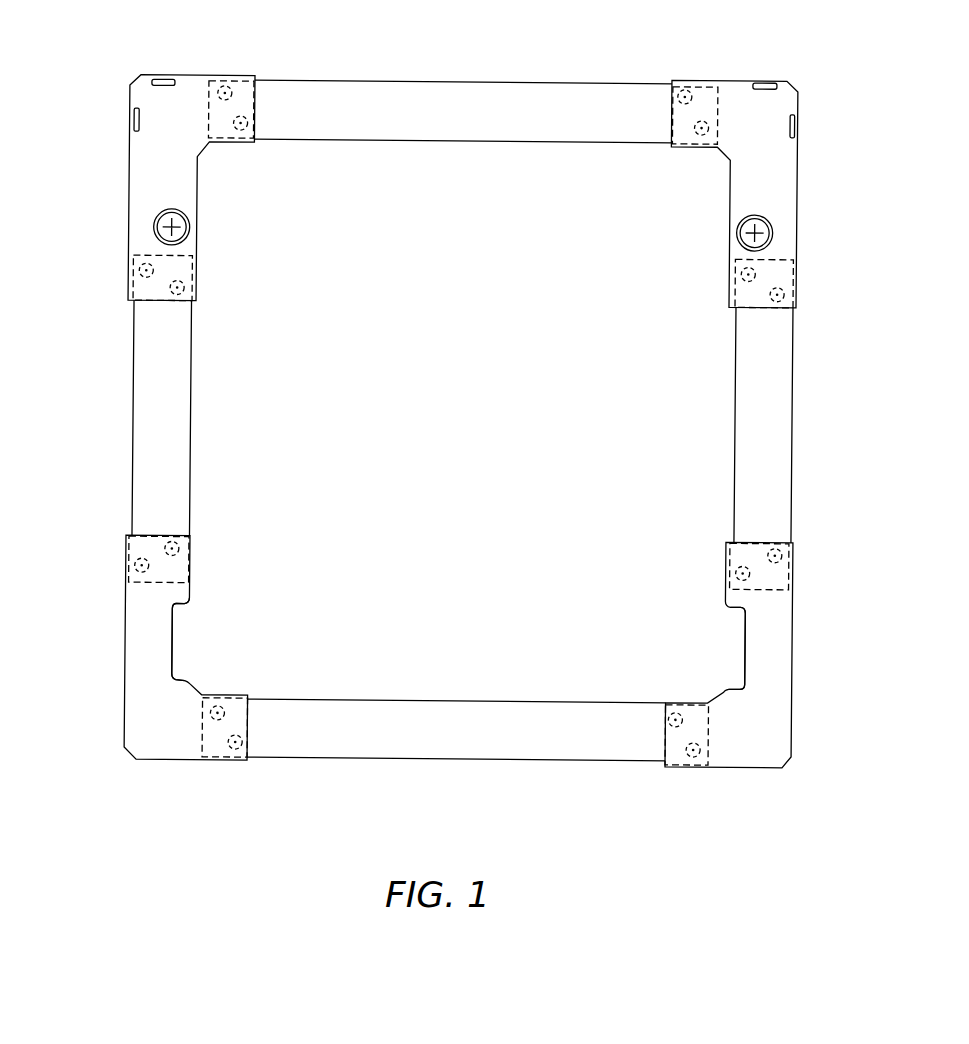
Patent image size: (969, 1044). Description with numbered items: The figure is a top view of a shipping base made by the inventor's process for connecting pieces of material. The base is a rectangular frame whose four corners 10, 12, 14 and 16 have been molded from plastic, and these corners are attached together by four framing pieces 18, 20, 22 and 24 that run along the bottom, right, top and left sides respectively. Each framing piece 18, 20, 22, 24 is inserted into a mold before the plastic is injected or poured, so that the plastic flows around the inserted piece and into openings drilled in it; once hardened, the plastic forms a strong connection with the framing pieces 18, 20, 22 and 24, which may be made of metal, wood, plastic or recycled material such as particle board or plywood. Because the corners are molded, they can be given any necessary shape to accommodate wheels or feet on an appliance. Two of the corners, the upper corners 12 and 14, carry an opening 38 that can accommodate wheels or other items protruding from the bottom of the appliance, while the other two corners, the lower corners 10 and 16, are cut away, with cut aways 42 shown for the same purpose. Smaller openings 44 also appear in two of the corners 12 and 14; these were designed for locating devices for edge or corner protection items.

The corner 10 is at (777, 649).
The corner 12 is at (783, 174).
The corner 14 is at (148, 178).
The corner 16 is at (135, 661).
The framing piece 18 is at (393, 734).
The framing piece 20 is at (780, 399).
The framing piece 22 is at (399, 98).
The framing piece 24 is at (155, 391).
The opening 38 is at (179, 231).
The cut away 42 is at (182, 640).
The smaller opening 44 is at (154, 81).